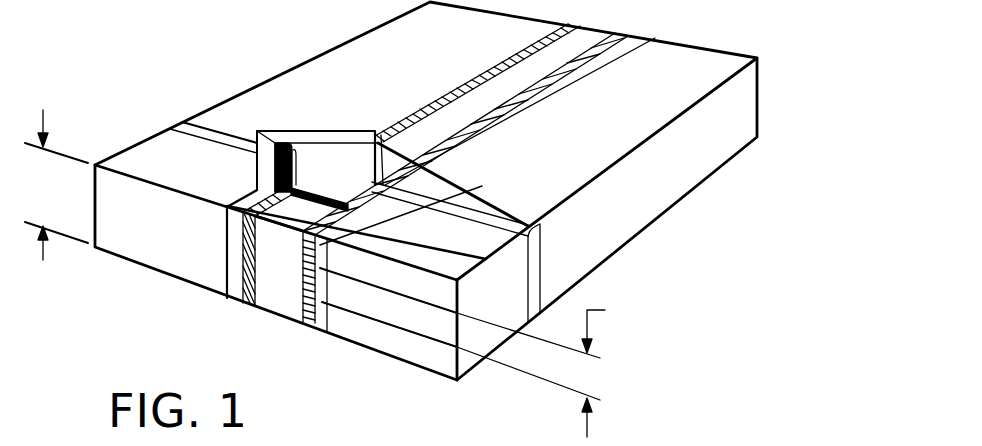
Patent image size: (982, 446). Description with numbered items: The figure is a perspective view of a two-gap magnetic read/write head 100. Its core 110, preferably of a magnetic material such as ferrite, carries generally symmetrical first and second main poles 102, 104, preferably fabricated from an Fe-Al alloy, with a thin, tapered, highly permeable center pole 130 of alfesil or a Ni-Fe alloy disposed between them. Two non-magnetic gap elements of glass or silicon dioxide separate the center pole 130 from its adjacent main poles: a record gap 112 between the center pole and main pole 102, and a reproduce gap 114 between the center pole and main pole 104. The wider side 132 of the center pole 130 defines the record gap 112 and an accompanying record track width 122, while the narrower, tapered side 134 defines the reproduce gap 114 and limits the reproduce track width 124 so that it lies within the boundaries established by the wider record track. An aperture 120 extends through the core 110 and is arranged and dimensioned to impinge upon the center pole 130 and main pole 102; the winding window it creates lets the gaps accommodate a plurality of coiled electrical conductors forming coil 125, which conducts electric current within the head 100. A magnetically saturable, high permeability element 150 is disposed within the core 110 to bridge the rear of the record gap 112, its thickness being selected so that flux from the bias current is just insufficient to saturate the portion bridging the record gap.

The two-gap magnetic read/write head 100 is at (733, 38).
The first main pole 102 is at (233, 281).
The second main pole 104 is at (323, 328).
The core 110 is at (667, 187).
The record gap 112 is at (253, 300).
The reproduce gap 114 is at (307, 323).
The aperture 120 is at (337, 172).
The record track width 122 is at (55, 185).
The reproduce track width 124 is at (617, 368).
The coil 125 is at (147, 138).
The center pole 130 is at (270, 298).
The wider side of center pole 132 is at (253, 238).
The narrower center pole side 134 is at (632, 260).
The magnetically saturable high permeability element 150 is at (275, 167).